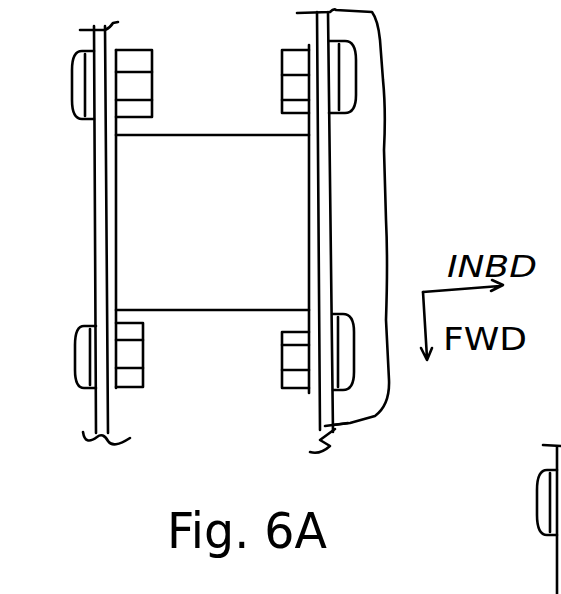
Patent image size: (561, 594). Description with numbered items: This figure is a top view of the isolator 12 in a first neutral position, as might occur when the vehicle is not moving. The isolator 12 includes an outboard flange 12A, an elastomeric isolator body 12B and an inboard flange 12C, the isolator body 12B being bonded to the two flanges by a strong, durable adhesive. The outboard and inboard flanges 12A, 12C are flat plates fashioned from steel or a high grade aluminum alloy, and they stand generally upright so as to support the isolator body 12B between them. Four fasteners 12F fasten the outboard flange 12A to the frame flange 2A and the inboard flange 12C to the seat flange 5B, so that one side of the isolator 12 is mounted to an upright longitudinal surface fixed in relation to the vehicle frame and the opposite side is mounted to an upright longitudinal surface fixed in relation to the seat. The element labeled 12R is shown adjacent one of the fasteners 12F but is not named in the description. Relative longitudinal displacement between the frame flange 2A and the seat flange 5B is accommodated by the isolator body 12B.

The frame flange 2A is at (95, 258).
The seat flange 5B is at (377, 190).
The isolator 12 is at (212, 219).
The outboard flange 12A is at (117, 193).
The elastomeric isolator body 12B is at (181, 312).
The inboard flange 12C is at (309, 186).
The fasteners 12F is at (152, 102).
The rear fastener 12R is at (282, 57).